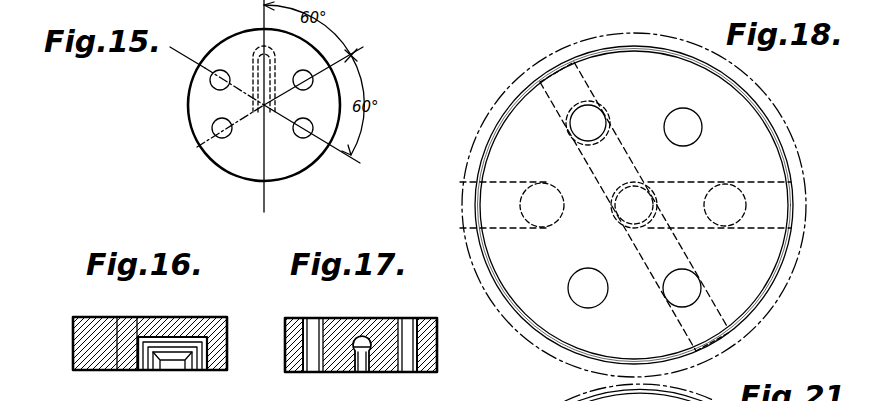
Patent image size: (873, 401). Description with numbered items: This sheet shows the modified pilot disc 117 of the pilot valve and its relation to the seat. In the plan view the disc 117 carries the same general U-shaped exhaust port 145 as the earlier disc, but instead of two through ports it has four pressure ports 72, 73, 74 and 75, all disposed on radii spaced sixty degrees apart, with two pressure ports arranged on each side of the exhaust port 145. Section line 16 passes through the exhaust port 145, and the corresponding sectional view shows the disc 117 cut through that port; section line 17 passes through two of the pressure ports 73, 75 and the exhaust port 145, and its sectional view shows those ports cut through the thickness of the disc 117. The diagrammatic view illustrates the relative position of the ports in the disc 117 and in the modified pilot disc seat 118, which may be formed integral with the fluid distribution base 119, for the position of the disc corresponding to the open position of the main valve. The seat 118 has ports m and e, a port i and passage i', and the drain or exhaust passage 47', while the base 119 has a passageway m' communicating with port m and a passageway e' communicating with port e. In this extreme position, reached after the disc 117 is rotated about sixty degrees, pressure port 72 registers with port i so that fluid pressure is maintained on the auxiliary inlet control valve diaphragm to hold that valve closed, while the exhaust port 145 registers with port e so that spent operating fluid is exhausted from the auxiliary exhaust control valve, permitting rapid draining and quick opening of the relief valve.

In FIG. 15, the section line 16— 16 is at (254, 19).
In FIG. 15, the section line 17— 17 is at (178, 40).
In FIG. 15, the pressure port 72 is at (218, 133).
In FIG. 16, the pressure port 72 is at (118, 317).
In FIG. 18, the pressure port 72 is at (588, 142).
In FIG. 15, the pressure port 73 is at (212, 86).
In FIG. 16, the pressure port 73 is at (176, 336).
In FIG. 17, the pressure port 73 is at (313, 372).
In FIG. 18, the pressure port 73 is at (702, 129).
In FIG. 15, the pressure port 74 is at (297, 89).
In FIG. 18, the pressure port 74 is at (702, 285).
In FIG. 15, the pressure port 75 is at (302, 138).
In FIG. 17, the pressure port 75 is at (410, 372).
In FIG. 18, the pressure port 75 is at (588, 308).
In FIG. 15, the modified pilot disc 117 is at (198, 117).
In FIG. 16, the modified pilot disc 117 is at (227, 348).
In FIG. 17, the modified pilot disc 117 is at (437, 347).
In FIG. 18, the modified pilot disc 117 is at (755, 137).
In FIG. 18, the modified pilot disc seat 118 is at (493, 133).
In FIG. 18, the fluid distribution base 119 is at (501, 92).
In FIG. 15, the U-shaped exhaust port 145 is at (272, 84).
In FIG. 16, the U-shaped exhaust port 145 is at (201, 336).
In FIG. 17, the U-shaped exhaust port 145 is at (359, 372).
In FIG. 18, the U-shaped exhaust port 145 is at (681, 188).
In FIG. 18, the port m is at (542, 192).
In FIG. 18, the passageway m' is at (482, 205).
In FIG. 18, the port e is at (732, 192).
In FIG. 18, the passageway e' is at (733, 189).
In FIG. 18, the port i is at (616, 193).
In FIG. 18, the passage i' is at (651, 195).
In FIG. 18, the drain or exhaust passage 47' is at (680, 338).